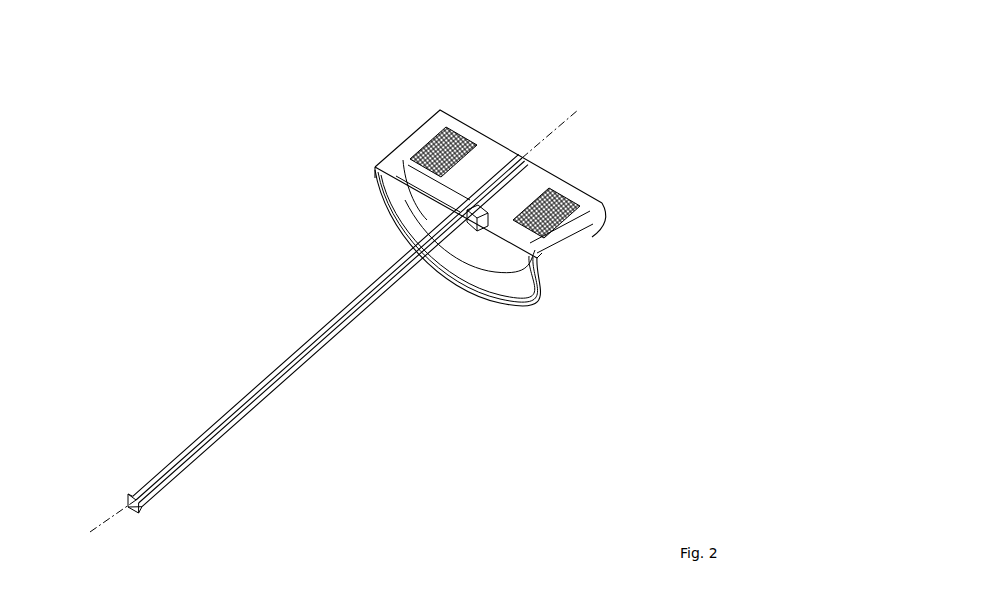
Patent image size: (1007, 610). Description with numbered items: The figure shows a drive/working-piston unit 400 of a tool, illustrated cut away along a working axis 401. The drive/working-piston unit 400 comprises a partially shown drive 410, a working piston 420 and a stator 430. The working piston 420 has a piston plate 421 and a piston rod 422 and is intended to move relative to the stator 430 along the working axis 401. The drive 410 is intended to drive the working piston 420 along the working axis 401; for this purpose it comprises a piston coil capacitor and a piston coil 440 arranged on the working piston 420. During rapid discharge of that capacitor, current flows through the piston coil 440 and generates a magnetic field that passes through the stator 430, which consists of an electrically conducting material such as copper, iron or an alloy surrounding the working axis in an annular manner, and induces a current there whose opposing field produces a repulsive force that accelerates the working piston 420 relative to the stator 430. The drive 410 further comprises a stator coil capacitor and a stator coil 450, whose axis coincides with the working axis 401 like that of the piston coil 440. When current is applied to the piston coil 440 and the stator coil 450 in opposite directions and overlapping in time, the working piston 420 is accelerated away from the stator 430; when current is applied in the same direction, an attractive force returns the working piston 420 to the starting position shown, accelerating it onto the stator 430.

The drive/working-piston unit 400 is at (376, 281).
The working axis 401 is at (567, 117).
The drive 410 is at (536, 255).
The working piston 420 is at (334, 316).
The piston plate 421 is at (495, 245).
The piston rod 422 is at (365, 305).
The stator 430 is at (527, 179).
The piston coil 440 is at (548, 230).
The stator coil 450 is at (562, 212).